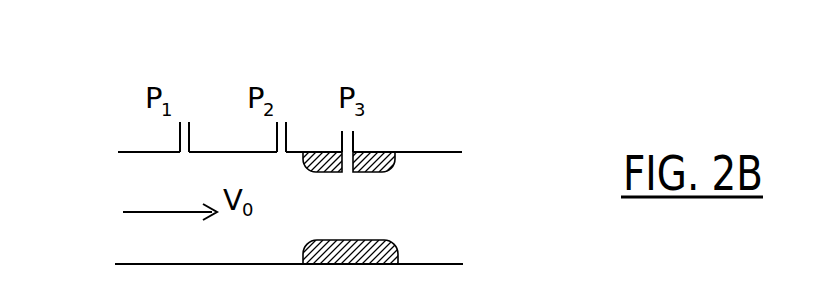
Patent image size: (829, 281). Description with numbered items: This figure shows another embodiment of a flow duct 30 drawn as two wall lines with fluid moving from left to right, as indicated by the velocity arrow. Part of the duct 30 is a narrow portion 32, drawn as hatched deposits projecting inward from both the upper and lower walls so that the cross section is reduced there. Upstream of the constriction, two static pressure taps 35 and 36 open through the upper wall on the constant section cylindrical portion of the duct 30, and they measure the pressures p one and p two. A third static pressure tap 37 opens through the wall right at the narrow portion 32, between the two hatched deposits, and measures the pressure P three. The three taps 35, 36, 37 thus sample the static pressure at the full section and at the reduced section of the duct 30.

The duct 30 is at (450, 137).
The narrow portion 32 is at (383, 162).
The static pressure tap 35 is at (193, 137).
The static pressure tap 36 is at (290, 136).
The third static pressure tap 37 is at (362, 144).